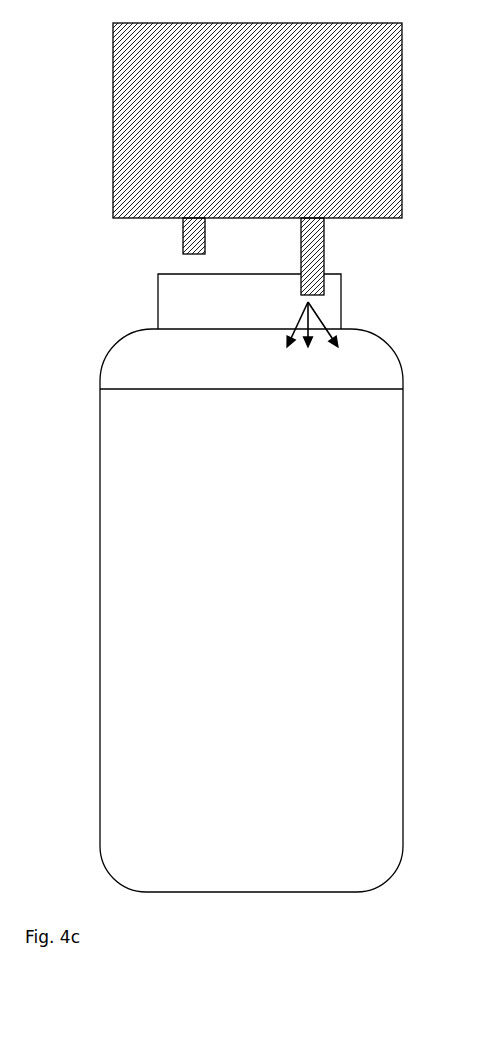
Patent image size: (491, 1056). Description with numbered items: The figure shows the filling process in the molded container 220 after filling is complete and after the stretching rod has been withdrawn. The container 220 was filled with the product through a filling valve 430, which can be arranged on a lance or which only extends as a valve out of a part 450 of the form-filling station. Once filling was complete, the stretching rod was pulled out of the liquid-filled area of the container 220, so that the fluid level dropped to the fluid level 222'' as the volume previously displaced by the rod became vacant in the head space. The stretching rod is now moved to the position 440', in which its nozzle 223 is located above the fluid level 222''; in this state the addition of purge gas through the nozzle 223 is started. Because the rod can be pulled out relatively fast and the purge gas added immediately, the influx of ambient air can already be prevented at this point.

The part of the form-filling station 450 is at (205, 126).
The filling valve 430 is at (191, 236).
The stretching rod position 440' is at (355, 256).
The nozzle 223 is at (323, 292).
The molded container 220 is at (100, 547).
The fluid level 222'' is at (214, 388).